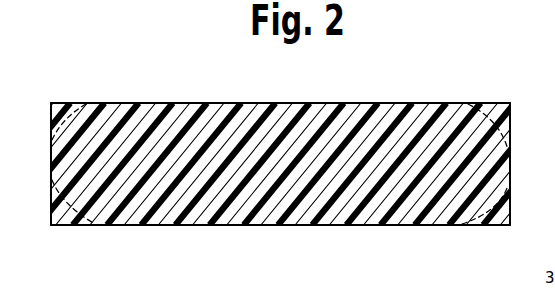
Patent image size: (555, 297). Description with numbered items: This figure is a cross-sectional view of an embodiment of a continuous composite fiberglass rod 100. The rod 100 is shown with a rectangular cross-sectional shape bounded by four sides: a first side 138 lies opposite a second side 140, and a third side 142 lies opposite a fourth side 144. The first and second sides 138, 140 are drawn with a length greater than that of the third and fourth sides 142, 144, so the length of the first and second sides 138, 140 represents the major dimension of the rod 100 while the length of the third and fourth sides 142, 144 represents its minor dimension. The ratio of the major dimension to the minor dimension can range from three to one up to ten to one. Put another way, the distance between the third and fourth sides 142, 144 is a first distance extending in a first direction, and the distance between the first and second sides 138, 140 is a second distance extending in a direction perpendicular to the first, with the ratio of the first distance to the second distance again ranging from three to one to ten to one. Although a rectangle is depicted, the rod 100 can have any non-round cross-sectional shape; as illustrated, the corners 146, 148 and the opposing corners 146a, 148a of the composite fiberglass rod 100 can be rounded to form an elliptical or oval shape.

The composite fiberglass rod 100 is at (383, 103).
The first side 138 is at (218, 103).
The second side 140 is at (212, 226).
The third side 142 is at (51, 157).
The fourth side 144 is at (511, 205).
The corner 146 is at (488, 103).
The opposing corner 146a is at (492, 211).
The corner 148 is at (68, 112).
The opposing corner 148a is at (53, 226).